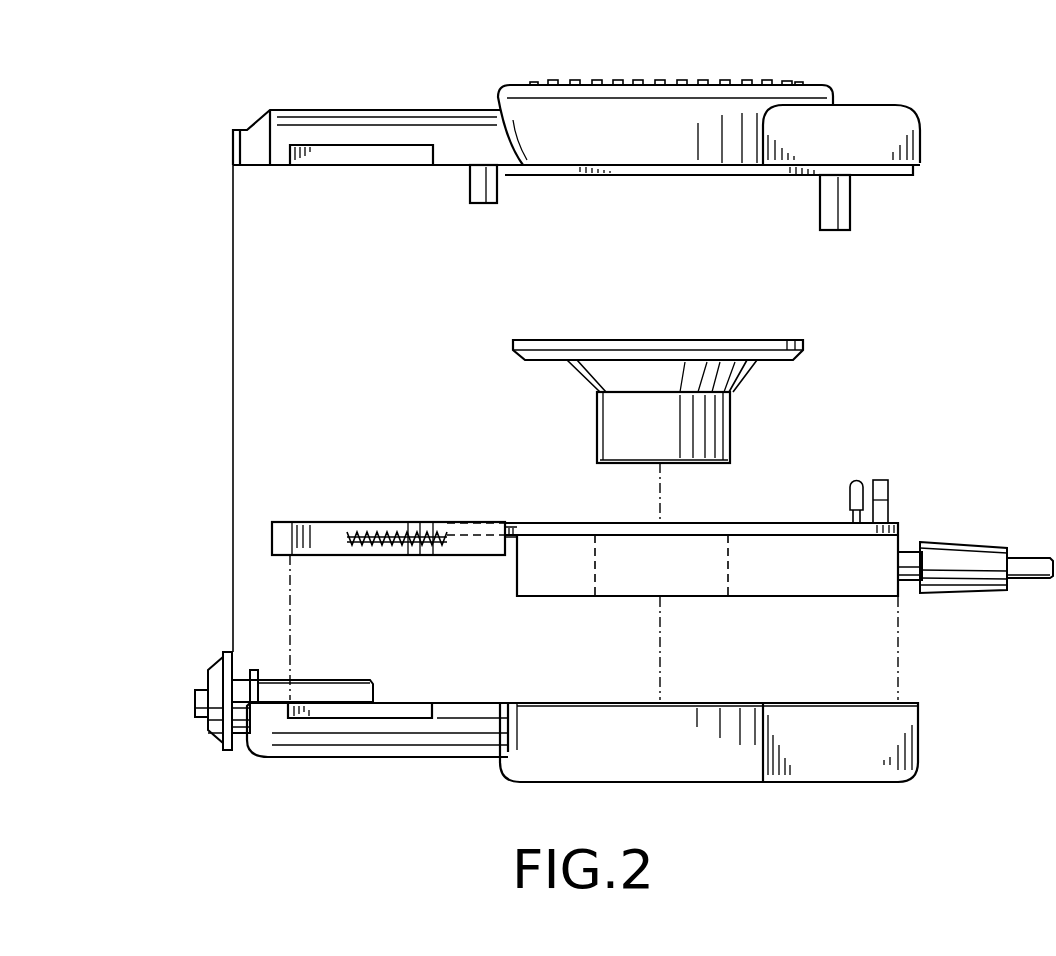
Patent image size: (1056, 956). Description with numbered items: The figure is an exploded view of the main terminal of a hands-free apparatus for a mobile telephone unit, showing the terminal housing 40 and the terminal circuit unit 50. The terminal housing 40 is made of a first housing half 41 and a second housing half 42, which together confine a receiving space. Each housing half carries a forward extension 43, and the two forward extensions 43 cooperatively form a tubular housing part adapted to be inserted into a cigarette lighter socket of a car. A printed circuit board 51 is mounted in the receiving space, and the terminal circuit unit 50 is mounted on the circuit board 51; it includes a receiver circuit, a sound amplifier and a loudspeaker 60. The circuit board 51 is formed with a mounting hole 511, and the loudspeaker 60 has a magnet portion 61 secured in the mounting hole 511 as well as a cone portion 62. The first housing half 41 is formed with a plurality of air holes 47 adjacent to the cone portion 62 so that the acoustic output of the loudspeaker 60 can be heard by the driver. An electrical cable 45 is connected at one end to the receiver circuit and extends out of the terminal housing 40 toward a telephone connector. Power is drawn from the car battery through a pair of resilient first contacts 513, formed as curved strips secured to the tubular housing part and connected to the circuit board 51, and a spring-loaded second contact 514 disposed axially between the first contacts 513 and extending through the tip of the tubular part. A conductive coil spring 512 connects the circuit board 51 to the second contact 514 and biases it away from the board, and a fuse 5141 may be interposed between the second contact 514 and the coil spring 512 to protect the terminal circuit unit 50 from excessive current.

The terminal housing 40 is at (589, 417).
The first housing half 41 is at (910, 103).
The second housing half 42 is at (910, 760).
The forward extension 43 is at (447, 122).
The electrical cable 45 is at (1020, 565).
The air holes 47 is at (677, 80).
The terminal circuit unit 50 is at (603, 594).
The printed circuit board 51 is at (585, 529).
The mounting hole 511 is at (615, 528).
The conductive coil spring 512 is at (395, 530).
The resilient first contacts 513 is at (318, 540).
The spring-loaded second contact 514 is at (202, 690).
The fuse 5141 is at (330, 692).
The loudspeaker 60 is at (678, 380).
The magnet portion 61 is at (717, 427).
The cone portion 62 is at (603, 372).